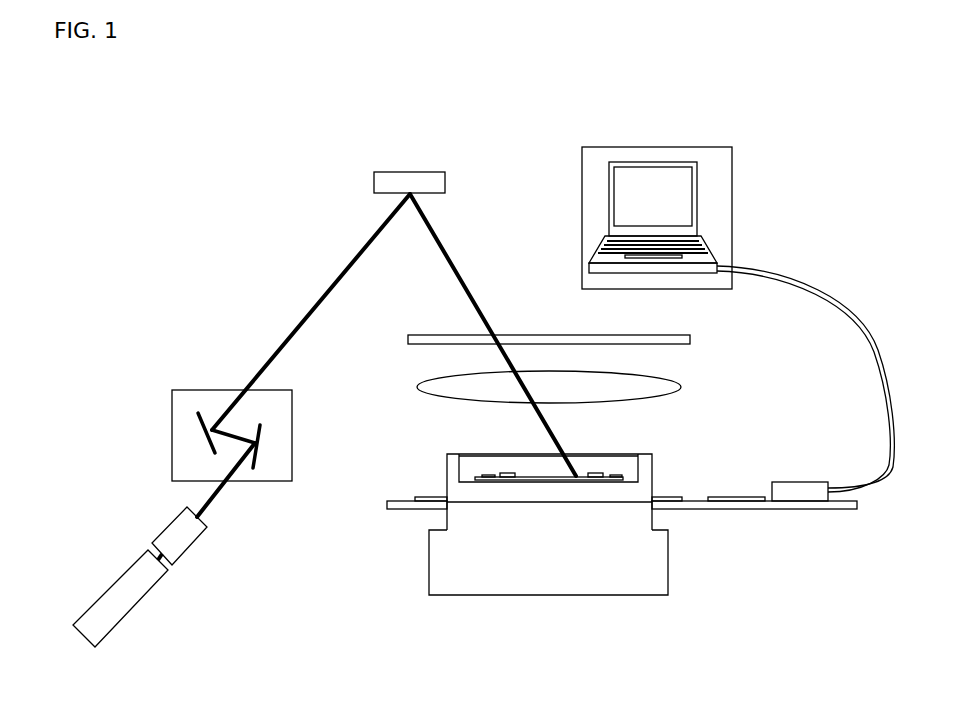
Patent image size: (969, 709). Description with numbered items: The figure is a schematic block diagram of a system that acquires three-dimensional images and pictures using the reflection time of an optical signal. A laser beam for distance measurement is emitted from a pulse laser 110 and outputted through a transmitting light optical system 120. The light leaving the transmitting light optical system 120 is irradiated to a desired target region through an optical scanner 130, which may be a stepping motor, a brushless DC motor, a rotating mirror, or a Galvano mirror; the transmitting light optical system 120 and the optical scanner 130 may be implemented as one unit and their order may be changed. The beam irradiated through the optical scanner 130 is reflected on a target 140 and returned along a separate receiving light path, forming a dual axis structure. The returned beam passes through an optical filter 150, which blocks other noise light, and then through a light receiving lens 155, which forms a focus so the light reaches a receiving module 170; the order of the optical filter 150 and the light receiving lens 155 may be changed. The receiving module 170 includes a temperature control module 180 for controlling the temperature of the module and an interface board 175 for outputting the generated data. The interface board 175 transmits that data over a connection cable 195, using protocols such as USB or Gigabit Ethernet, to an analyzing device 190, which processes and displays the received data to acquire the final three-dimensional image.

The laser source 110 is at (135, 603).
The transmitting light optical system 120 is at (192, 547).
The optical scanner 130 is at (172, 437).
The target 140 is at (409, 172).
The optical filter 150 is at (690, 340).
The light receiving lens 155 is at (682, 390).
The receiving module 170 is at (447, 470).
The interface board 175 is at (785, 510).
The temperature control module 180 is at (668, 568).
The analyzing device 190 is at (732, 193).
The connection cable 195 is at (873, 357).